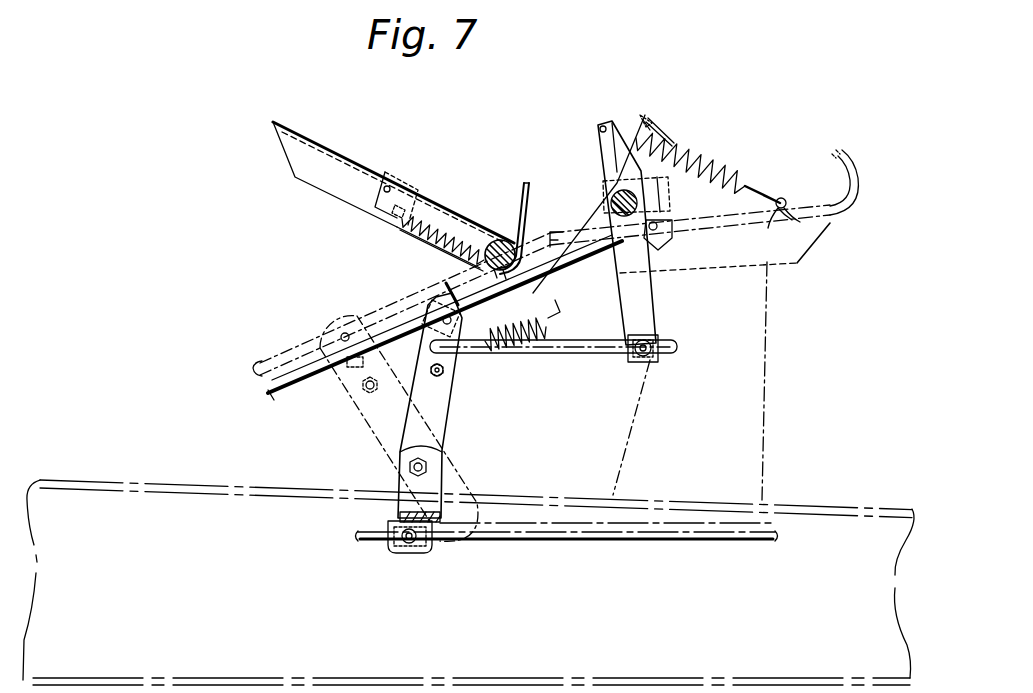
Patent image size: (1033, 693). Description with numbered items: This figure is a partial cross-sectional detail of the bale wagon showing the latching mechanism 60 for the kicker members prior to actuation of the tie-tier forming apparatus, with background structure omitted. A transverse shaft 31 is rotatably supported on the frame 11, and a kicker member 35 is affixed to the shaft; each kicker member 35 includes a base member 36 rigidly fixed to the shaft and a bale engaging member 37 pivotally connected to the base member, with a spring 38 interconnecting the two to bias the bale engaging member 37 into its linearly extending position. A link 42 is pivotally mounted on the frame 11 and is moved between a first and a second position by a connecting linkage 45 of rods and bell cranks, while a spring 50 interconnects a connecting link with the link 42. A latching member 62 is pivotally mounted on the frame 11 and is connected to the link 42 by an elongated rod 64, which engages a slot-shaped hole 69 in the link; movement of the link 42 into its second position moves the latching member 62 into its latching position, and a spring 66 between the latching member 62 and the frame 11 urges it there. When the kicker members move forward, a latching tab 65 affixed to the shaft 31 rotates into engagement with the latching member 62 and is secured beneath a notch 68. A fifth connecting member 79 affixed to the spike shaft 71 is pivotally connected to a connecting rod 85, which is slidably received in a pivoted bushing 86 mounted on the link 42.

The frame 11 is at (764, 490).
The transverse shaft 31 is at (490, 273).
The kicker member 35 is at (383, 175).
The base member 36 is at (435, 197).
The bale engaging member 37 is at (314, 142).
The spring 38 is at (423, 235).
The link 42 is at (451, 428).
The connecting linkage 45 is at (649, 542).
The spring 50 is at (463, 359).
The latching mechanism 60 is at (675, 101).
The latching member 62 is at (598, 143).
The elongated rod 64 is at (553, 354).
The latching tab 65 is at (537, 194).
The spring 66 is at (697, 161).
The notch 68 is at (630, 330).
The slot-shaped hole 69 is at (414, 369).
The spike shaft 71 is at (609, 203).
The fifth connecting member 79 is at (662, 242).
The connecting rod 85 is at (303, 394).
The pivoted bushing 86 is at (425, 300).